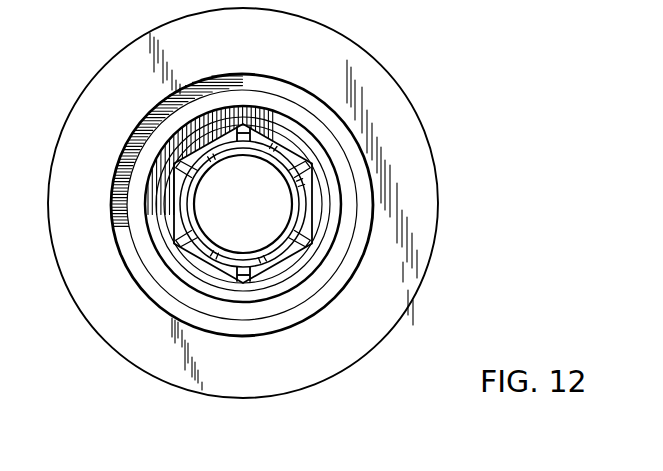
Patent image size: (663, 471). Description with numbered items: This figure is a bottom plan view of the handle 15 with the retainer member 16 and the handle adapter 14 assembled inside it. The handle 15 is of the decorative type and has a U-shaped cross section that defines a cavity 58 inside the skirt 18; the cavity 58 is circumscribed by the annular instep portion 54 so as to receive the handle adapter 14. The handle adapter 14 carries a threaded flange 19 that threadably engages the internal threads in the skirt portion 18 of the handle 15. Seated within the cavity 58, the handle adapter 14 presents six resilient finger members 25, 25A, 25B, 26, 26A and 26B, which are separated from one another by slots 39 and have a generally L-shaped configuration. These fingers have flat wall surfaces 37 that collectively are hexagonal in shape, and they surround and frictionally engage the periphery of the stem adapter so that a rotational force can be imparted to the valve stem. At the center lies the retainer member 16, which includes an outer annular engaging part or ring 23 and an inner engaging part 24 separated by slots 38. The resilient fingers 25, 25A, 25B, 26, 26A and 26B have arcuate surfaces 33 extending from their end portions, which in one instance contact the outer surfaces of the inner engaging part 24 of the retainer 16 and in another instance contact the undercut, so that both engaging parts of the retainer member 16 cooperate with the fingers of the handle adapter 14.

The handle adapter 14 is at (337, 207).
The handle 15 is at (348, 38).
The retainer member 16 is at (265, 147).
The skirt portion 18 is at (98, 71).
The threaded flange 19 is at (328, 268).
The outer annular engaging part 23 is at (248, 142).
The inner engaging part 24 is at (279, 238).
The resilient finger member 25 is at (310, 207).
The resilient finger member 25A is at (278, 260).
The resilient finger member 25B is at (272, 147).
The resilient finger member 26 is at (173, 213).
The resilient finger member 26A is at (207, 252).
The resilient finger member 26B is at (207, 152).
The end surface 33 is at (190, 204).
The flat wall surface 37 is at (204, 264).
The slot 38 is at (296, 183).
The slot 39 is at (244, 281).
The annular instep portion 54 is at (367, 175).
The cavity 58 is at (148, 184).